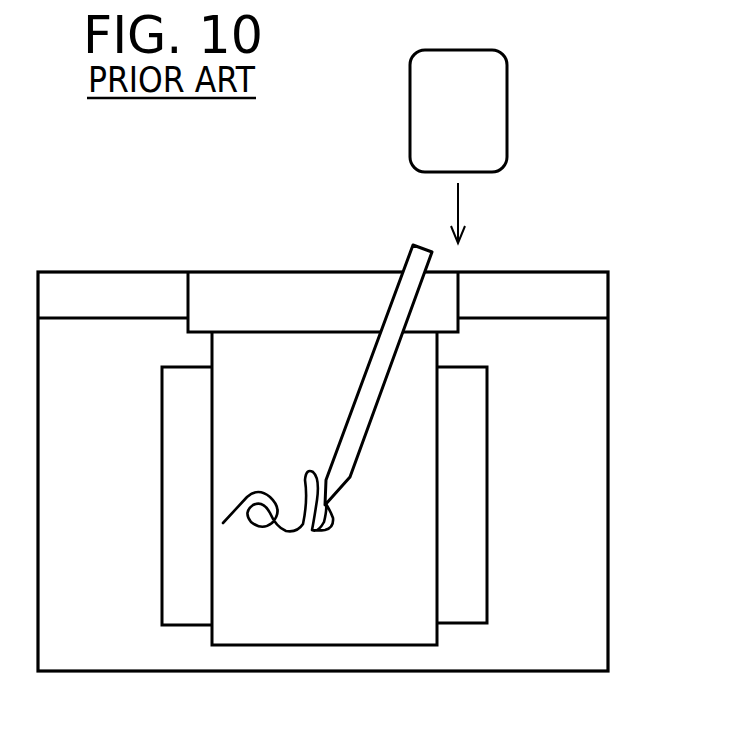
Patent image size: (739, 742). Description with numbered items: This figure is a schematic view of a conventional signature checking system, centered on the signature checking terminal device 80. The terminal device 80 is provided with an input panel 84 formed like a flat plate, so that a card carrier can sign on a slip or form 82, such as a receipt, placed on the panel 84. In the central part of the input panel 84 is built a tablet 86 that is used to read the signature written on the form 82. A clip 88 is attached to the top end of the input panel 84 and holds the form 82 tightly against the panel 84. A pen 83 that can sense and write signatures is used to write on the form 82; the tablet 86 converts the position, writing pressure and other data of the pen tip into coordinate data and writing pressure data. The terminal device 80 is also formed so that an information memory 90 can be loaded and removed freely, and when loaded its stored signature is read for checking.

The signature checking terminal device 80 is at (538, 272).
The slip or form 82 is at (425, 485).
The pen 83 is at (412, 262).
The input panel 84 is at (588, 531).
The tablet 86 is at (492, 416).
The clip 88 is at (288, 282).
The information memory 90 is at (498, 82).